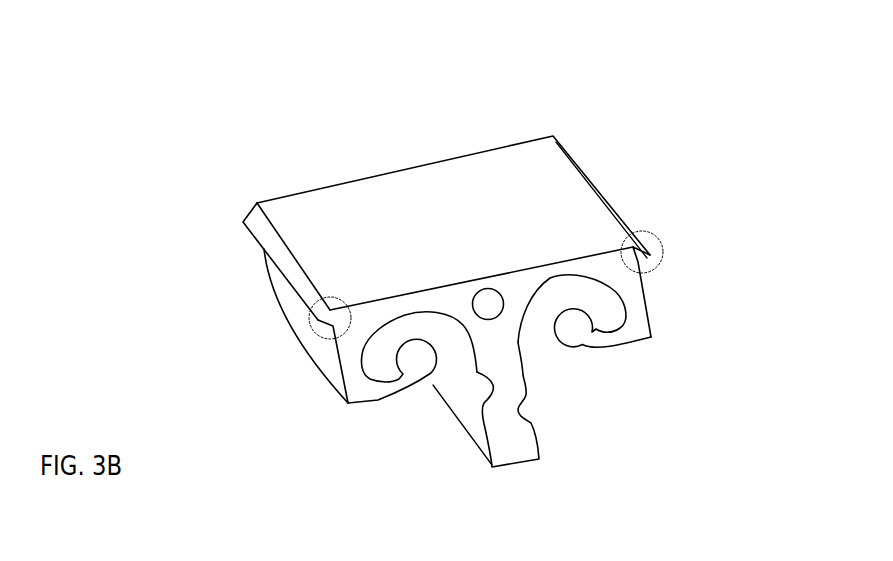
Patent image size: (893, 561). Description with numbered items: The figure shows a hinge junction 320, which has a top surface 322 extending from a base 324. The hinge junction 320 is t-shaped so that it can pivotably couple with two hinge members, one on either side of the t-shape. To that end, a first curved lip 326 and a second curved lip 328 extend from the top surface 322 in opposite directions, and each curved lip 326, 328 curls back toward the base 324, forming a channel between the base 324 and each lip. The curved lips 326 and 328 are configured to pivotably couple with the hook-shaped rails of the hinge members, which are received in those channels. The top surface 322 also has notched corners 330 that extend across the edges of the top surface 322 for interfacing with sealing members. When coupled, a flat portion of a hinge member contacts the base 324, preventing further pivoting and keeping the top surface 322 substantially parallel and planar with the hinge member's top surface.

The hinge junction 320 is at (379, 278).
The top surface 322 is at (448, 190).
The base 324 is at (507, 455).
The first curved lip 326 is at (430, 360).
The second curved lip 328 is at (577, 337).
The notched corners 330 is at (314, 339).